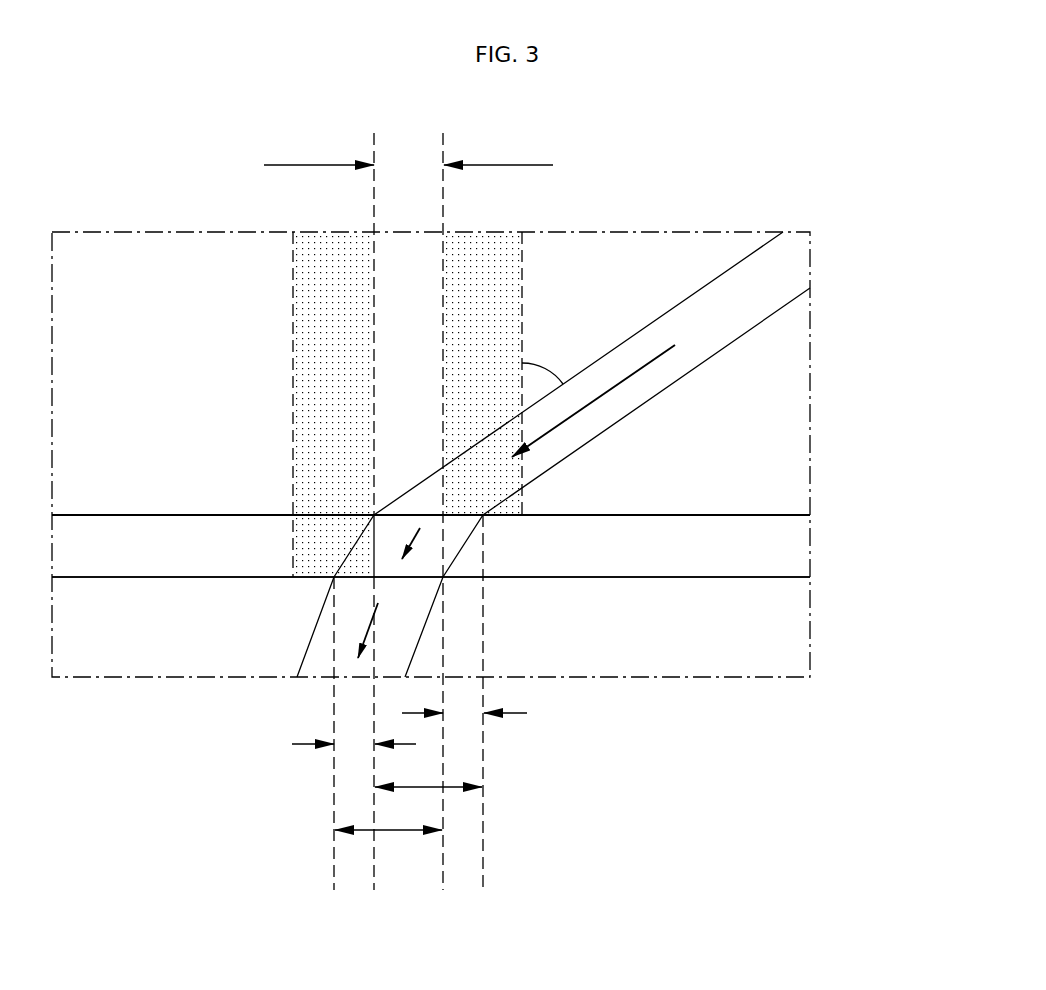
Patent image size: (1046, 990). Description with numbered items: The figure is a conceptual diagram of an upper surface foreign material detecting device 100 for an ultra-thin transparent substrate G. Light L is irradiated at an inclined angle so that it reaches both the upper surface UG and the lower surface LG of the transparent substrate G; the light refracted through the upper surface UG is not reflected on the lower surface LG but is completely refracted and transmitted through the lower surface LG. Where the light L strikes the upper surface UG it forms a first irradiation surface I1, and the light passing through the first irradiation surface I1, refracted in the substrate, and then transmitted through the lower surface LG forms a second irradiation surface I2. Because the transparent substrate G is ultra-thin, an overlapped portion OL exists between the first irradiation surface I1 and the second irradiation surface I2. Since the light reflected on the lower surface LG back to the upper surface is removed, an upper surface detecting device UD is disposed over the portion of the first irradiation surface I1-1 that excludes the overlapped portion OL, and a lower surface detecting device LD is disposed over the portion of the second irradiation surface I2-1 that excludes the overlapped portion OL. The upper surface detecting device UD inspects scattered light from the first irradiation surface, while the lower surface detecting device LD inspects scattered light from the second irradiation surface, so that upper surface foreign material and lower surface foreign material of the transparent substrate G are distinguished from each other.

The upper surface foreign material detecting device 100 is at (834, 190).
The transparent substrate G is at (797, 550).
The upper surface UG is at (797, 522).
The lower surface LG is at (797, 582).
The lower surface detecting device LD is at (327, 243).
The upper surface detecting device UD is at (509, 243).
The overlapped portion OL is at (408, 508).
The light L is at (795, 273).
The first irradiation surface except for the overlapped portion I1-1 is at (463, 713).
The second irradiation surface except for the overlapped portion I2-1 is at (355, 745).
The first irradiation surface I1 is at (428, 787).
The second irradiation surface I2 is at (388, 832).